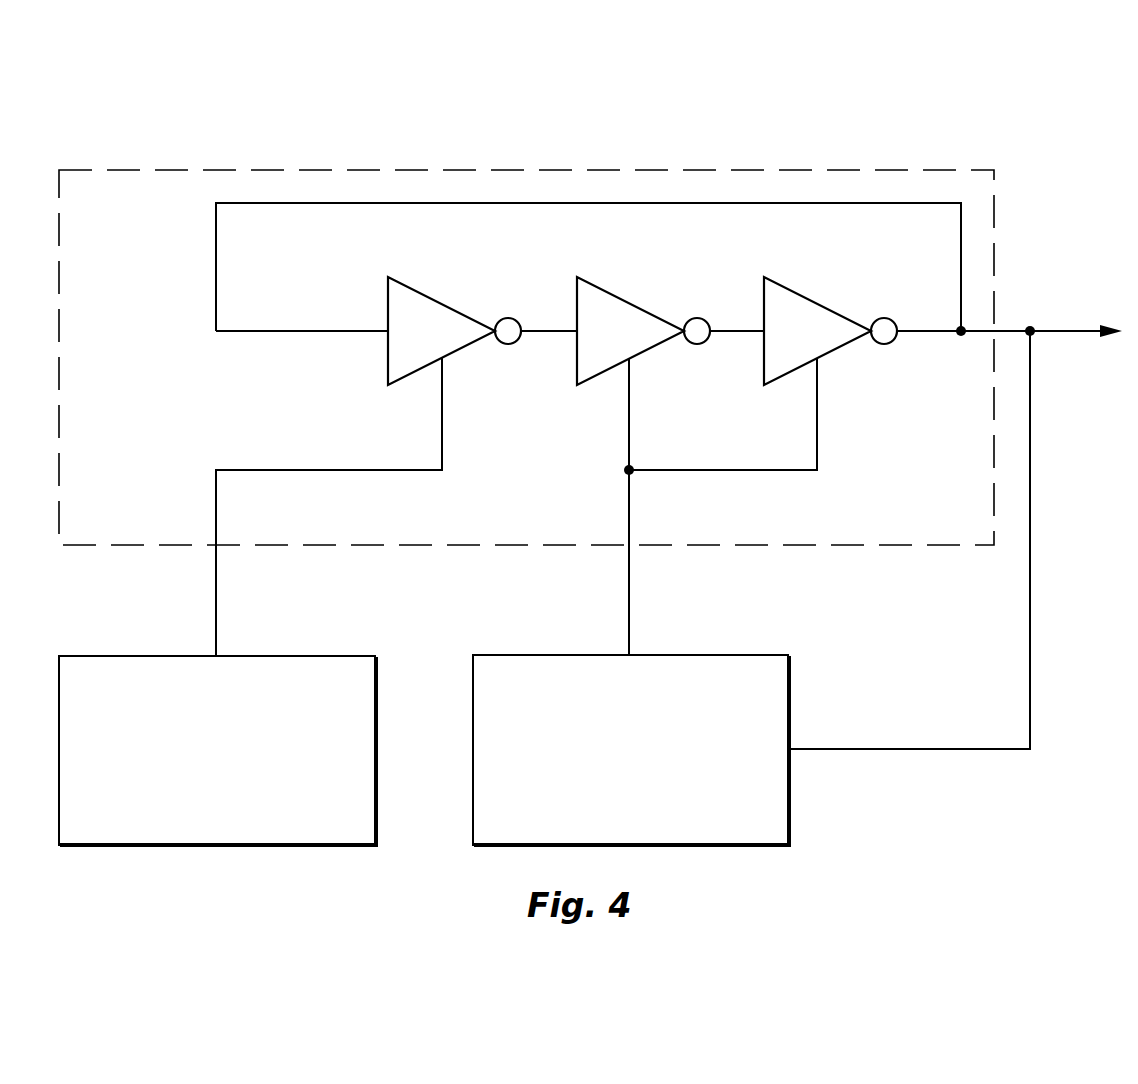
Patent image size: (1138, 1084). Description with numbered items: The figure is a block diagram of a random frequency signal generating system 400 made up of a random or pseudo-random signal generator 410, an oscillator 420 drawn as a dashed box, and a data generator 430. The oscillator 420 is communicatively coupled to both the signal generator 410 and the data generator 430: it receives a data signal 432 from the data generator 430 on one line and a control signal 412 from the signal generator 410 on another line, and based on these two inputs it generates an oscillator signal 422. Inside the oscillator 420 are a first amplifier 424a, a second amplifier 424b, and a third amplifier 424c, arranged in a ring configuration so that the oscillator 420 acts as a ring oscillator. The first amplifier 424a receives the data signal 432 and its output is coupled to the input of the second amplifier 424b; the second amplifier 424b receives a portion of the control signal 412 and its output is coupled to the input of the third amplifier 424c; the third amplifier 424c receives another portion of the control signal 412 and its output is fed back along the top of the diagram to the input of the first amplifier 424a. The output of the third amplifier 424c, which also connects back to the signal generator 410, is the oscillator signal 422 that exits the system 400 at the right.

The random frequency signal generating system 400 is at (136, 130).
The oscillator 420 is at (752, 170).
The oscillator signal 422 is at (1053, 331).
The first amplifier 424a is at (448, 343).
The second amplifier 424b is at (637, 343).
The third amplifier 424c is at (823, 343).
The data signal 432 is at (218, 590).
The control signal 412 is at (631, 590).
The data generator 430 is at (200, 775).
The signal generator 410 is at (614, 775).